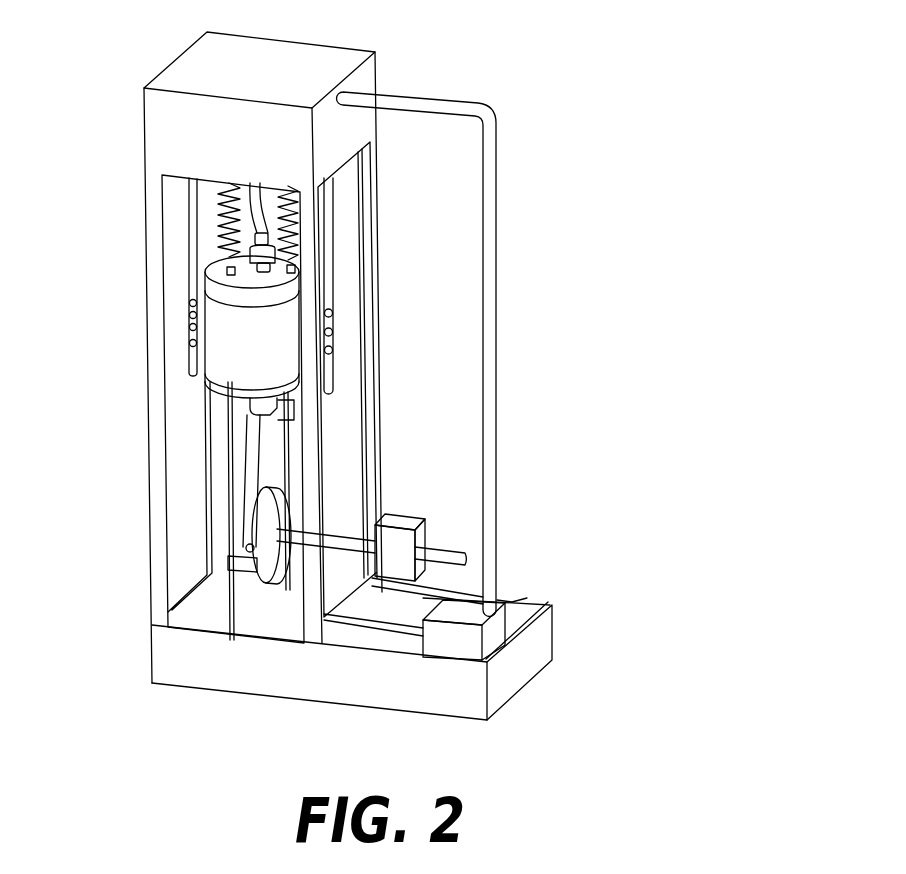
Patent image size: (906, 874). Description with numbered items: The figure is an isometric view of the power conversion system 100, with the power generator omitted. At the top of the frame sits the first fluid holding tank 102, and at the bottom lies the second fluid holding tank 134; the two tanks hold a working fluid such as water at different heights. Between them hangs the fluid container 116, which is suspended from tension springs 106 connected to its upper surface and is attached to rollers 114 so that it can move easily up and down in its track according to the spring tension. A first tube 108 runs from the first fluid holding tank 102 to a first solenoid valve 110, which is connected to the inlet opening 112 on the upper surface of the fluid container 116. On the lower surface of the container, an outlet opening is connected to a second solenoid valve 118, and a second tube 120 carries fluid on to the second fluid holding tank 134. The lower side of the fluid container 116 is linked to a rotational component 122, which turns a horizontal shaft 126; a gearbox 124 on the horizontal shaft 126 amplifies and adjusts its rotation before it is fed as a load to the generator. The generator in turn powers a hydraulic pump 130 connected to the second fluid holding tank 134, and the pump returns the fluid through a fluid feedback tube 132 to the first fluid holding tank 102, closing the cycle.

The power conversion system 100 is at (562, 56).
The first fluid holding tank 102 is at (160, 122).
The tension springs 106 is at (220, 200).
The first tube 108 is at (246, 252).
The first solenoid valve 110 is at (232, 263).
The inlet opening 112 is at (207, 277).
The rollers 114 is at (196, 352).
The fluid container 116 is at (210, 393).
The second solenoid valve 118 is at (277, 417).
The second tube 120 is at (280, 588).
The rotational component 122 is at (250, 551).
The gearbox 124 is at (417, 510).
The horizontal shaft 126 is at (457, 543).
The hydraulic pump 130 is at (550, 607).
The fluid feedback tube 132 is at (497, 410).
The second fluid holding tank 134 is at (517, 680).